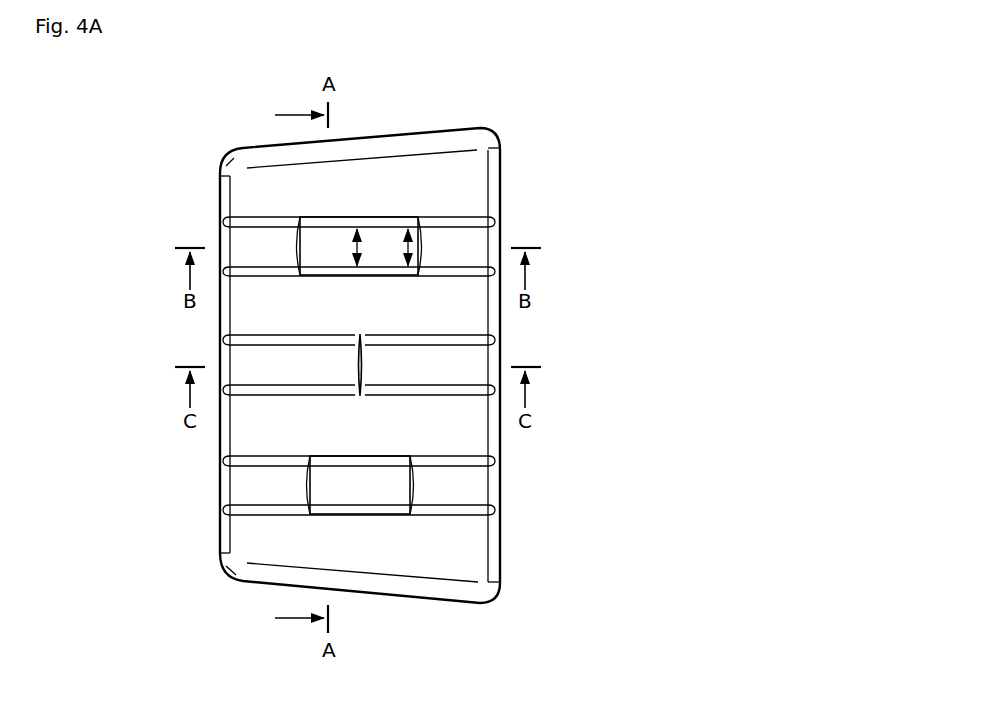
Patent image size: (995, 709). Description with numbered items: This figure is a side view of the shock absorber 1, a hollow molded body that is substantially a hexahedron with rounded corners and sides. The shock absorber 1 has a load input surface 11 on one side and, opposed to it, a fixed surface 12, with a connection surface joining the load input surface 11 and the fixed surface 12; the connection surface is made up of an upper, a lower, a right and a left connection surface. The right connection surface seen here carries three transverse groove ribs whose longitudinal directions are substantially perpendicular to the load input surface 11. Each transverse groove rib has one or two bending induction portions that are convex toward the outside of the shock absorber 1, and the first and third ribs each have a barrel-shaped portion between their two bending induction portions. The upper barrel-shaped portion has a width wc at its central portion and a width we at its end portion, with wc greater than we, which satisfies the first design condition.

The shock absorber 1 is at (553, 111).
The load input surface 11 is at (216, 436).
The fixed surface 12 is at (512, 546).
The width at the end portion we is at (403, 246).
The width at the central portion wc is at (353, 245).